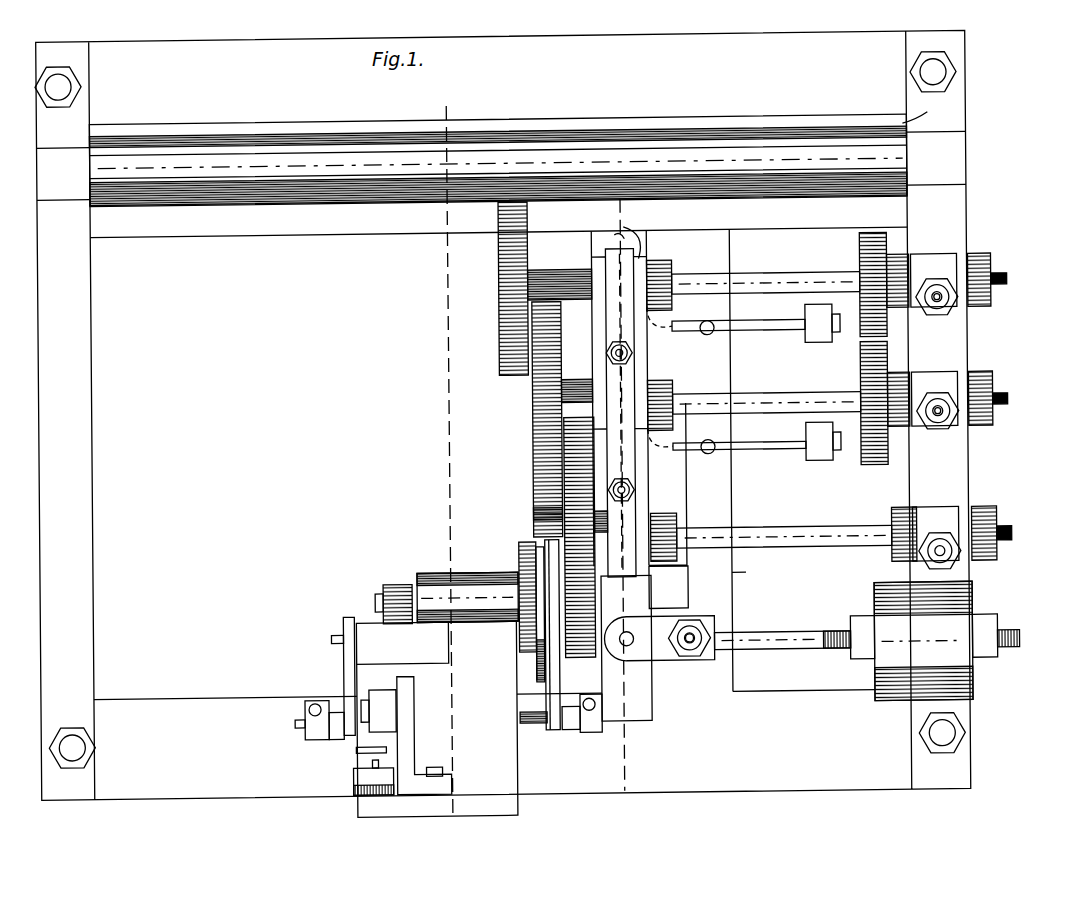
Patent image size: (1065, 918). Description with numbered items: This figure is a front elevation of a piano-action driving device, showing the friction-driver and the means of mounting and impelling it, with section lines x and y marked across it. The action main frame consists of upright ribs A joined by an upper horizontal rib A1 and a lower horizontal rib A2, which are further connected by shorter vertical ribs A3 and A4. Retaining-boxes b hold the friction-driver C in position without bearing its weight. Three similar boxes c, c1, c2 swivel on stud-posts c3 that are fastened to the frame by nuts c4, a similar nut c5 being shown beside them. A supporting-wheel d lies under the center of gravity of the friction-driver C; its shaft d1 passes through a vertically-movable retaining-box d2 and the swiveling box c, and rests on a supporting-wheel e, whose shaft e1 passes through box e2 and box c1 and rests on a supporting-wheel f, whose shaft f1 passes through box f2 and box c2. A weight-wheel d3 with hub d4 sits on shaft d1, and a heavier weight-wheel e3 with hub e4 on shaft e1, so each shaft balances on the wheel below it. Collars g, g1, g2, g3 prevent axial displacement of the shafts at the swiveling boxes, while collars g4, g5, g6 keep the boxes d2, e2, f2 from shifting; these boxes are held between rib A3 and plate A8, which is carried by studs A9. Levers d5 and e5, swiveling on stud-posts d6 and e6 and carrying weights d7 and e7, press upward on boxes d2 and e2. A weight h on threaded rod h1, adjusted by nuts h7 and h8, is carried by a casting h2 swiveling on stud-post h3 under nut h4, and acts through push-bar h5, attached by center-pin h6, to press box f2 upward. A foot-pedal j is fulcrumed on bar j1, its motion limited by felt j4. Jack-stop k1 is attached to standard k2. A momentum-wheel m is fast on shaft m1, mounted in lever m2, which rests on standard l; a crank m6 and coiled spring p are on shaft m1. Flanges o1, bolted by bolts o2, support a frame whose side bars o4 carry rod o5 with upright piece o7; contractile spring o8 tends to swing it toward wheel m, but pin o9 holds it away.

The upright ribs of the main frame A is at (503, 415).
The upper horizontal rib A1 is at (498, 221).
The lower horizontal rib A2 is at (670, 661).
The shorter vertical rib A3 is at (638, 470).
The shorter vertical rib A4 is at (749, 573).
The plate A8 is at (617, 413).
The studs A9 is at (607, 354).
The retaining-boxes b is at (501, 155).
The friction-driver C is at (498, 160).
The swiveling box c is at (938, 259).
The swiveling box c1 is at (925, 311).
The swiveling box c2 is at (939, 535).
The stud-posts c3 is at (949, 397).
The nuts c4 is at (940, 541).
The bolt end c5 is at (949, 393).
The supporting-wheel d is at (500, 262).
The shaft d1 is at (771, 276).
The vertically-movable retaining-box d2 is at (623, 232).
The weight-wheel d3 is at (861, 250).
The hub d4 is at (896, 268).
The lever d5 is at (755, 333).
The stud-post d6 is at (708, 323).
The weight d7 is at (822, 346).
The supporting-wheel e is at (533, 420).
The shaft e1 is at (760, 402).
The vertically-movable retaining-box e2 is at (652, 384).
The weight-wheel e3 is at (884, 403).
The hub e4 is at (899, 380).
The lever e5 is at (768, 452).
The stud-post e6 is at (708, 442).
The weight e7 is at (826, 462).
The supporting-wheel f is at (1018, 538).
The shaft f1 is at (780, 530).
The vertically-movable retaining-box f2 is at (652, 528).
The collar g is at (983, 262).
The collar g1 is at (983, 378).
The collar g2 is at (985, 566).
The collar g3 is at (893, 512).
The collar g4 is at (676, 266).
The collar g5 is at (676, 390).
The collar g6 is at (680, 518).
The weight h is at (923, 640).
The rod h1 is at (776, 638).
The casting h2 is at (659, 638).
The stud-post h3 is at (690, 632).
The nut h4 is at (686, 652).
The push-bar h5 is at (625, 662).
The center-pin h6 is at (624, 633).
The nut h7 is at (856, 656).
The nut h8 is at (990, 656).
The foot-pedal j is at (392, 772).
The bar j1 is at (351, 782).
The wad of felt j4 is at (351, 790).
The adjustable jack-stop k1 is at (378, 711).
The standard k2 is at (412, 720).
The standard l is at (437, 719).
The momentum-wheel m is at (533, 516).
The shaft m1 is at (374, 598).
The lever m2 is at (467, 597).
The crank m6 is at (395, 583).
The flanges o1 is at (306, 730).
The bolts o2 is at (313, 701).
The side bars o4 is at (334, 737).
The rod o5 is at (293, 720).
The upright piece o7 is at (347, 652).
The contractile spring o8 is at (545, 668).
The pin o9 is at (330, 636).
The coiled spring p is at (518, 552).
The section line x x is at (448, 460).
The section line y y is at (620, 511).